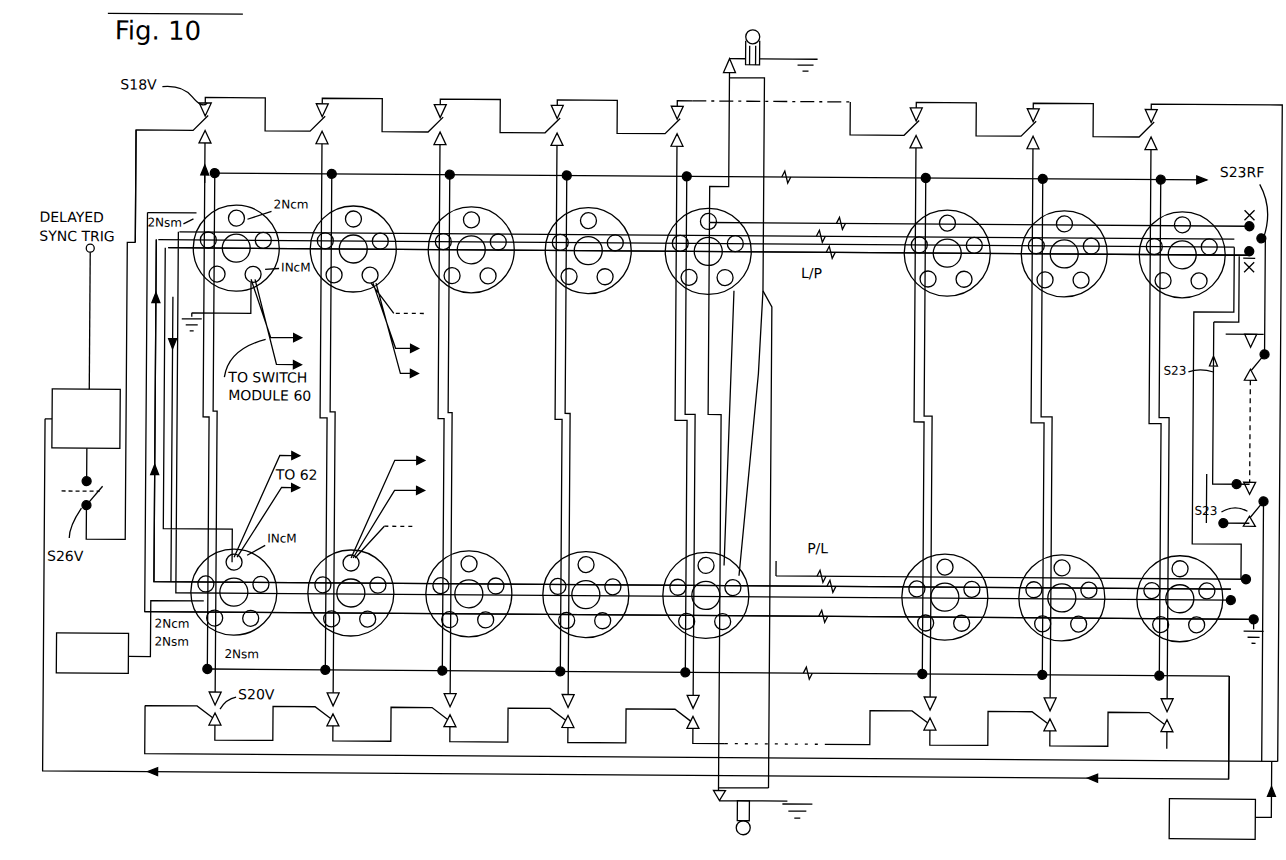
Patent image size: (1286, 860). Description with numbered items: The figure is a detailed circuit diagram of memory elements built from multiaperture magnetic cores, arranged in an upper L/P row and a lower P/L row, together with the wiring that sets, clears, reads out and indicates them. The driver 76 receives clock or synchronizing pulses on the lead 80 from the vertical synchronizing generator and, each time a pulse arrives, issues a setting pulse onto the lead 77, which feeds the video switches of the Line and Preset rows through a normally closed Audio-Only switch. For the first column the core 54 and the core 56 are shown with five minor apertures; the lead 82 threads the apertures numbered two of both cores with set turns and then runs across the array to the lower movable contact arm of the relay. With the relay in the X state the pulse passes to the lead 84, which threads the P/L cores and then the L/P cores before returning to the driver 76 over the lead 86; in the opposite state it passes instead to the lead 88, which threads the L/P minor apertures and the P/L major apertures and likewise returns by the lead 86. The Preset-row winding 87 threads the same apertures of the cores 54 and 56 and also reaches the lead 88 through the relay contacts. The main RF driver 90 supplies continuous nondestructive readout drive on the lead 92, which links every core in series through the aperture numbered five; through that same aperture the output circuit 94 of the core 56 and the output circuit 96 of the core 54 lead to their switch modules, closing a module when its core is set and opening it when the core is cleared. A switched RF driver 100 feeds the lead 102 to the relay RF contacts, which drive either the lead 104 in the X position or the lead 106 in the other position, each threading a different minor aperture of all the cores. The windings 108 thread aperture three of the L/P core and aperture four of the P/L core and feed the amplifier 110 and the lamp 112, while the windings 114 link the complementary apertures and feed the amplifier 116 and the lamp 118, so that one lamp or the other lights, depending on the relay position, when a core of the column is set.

The core 54 is at (242, 206).
The core 56 is at (246, 626).
The video driver 76 is at (55, 393).
The lead 77 is at (100, 500).
The lead 80 is at (89, 306).
The lead 82 is at (203, 162).
The lead 84 is at (410, 258).
The lead 86 is at (45, 590).
The winding 87 is at (236, 176).
The lead 88 is at (402, 222).
The main RF driver 90 is at (75, 637).
The lead 92 is at (262, 292).
The output circuit 94 is at (255, 470).
The output circuit 96 is at (280, 338).
The switched RF driver 100 is at (1172, 816).
The lead 102 is at (1274, 758).
The lead 104 is at (655, 620).
The lead 106 is at (786, 560).
The windings 108 is at (712, 208).
The amplifier 110 is at (720, 60).
The lamp 112 is at (762, 42).
The windings 114 is at (771, 420).
The amplifier 116 is at (716, 794).
The lamp 118 is at (739, 826).